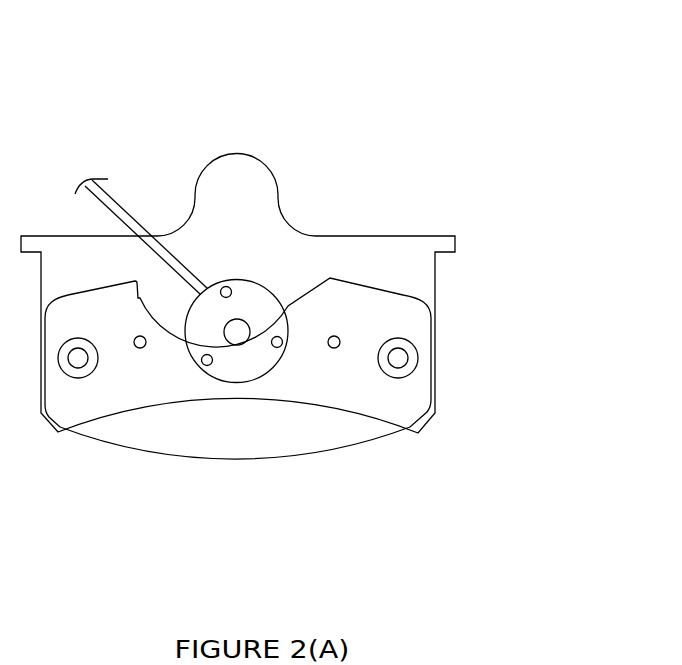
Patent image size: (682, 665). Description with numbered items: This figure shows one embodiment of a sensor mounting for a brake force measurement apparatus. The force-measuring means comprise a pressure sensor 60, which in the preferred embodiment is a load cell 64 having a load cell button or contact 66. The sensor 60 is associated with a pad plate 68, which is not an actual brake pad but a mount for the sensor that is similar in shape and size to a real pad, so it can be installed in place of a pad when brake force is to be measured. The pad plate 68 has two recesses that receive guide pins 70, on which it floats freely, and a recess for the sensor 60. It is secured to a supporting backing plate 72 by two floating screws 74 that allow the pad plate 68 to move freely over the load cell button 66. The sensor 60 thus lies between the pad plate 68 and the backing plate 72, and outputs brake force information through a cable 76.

The pressure sensor 60 is at (223, 195).
The backing plate 72 is at (260, 187).
The pad plate 68 is at (407, 322).
The load cell 64 is at (253, 303).
The load cell button 66 is at (243, 327).
The guide pins 70 is at (80, 372).
The floating screws 74 is at (143, 345).
The cable 76 is at (107, 200).